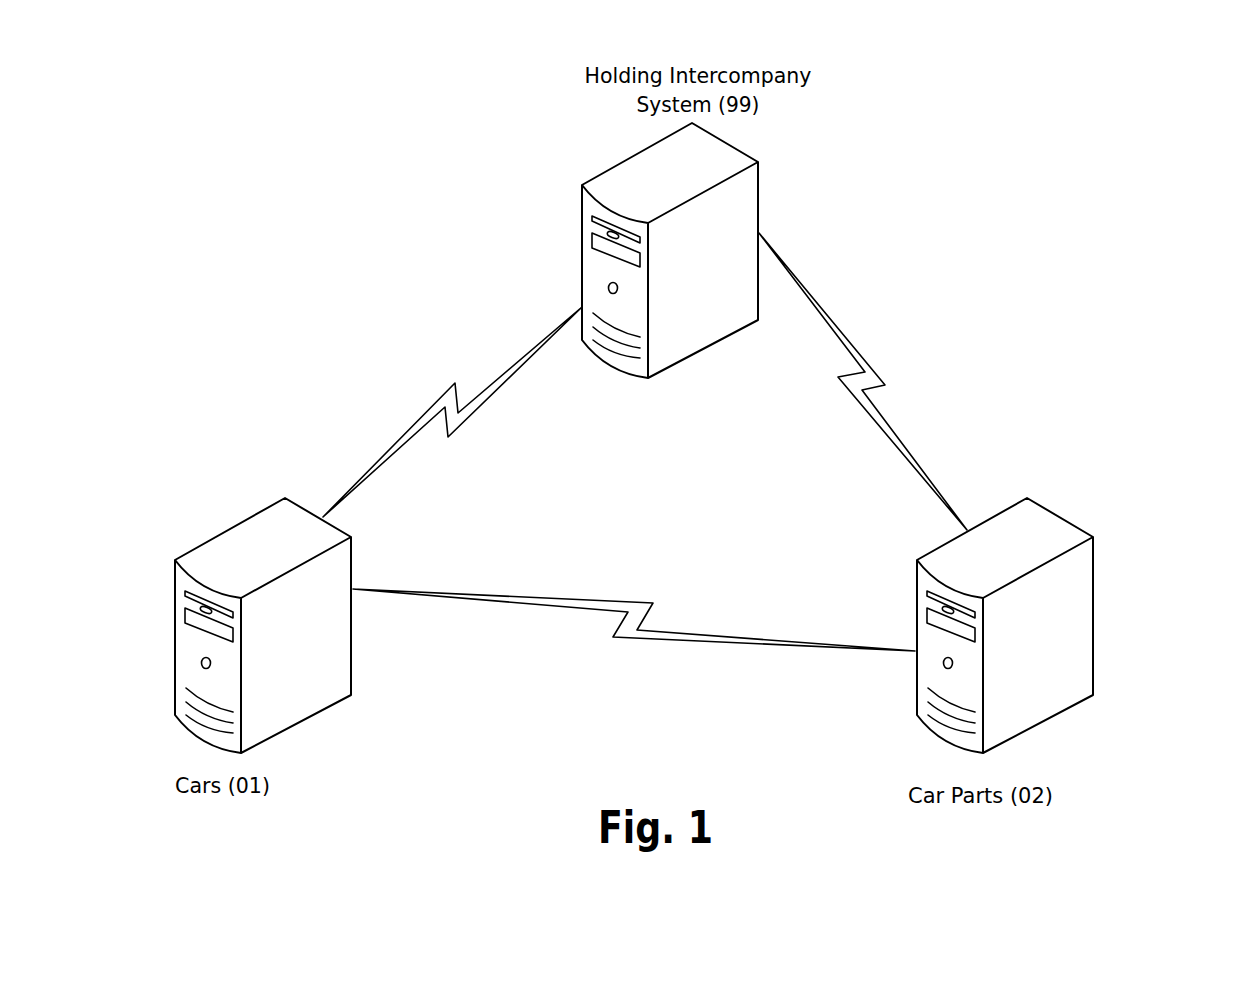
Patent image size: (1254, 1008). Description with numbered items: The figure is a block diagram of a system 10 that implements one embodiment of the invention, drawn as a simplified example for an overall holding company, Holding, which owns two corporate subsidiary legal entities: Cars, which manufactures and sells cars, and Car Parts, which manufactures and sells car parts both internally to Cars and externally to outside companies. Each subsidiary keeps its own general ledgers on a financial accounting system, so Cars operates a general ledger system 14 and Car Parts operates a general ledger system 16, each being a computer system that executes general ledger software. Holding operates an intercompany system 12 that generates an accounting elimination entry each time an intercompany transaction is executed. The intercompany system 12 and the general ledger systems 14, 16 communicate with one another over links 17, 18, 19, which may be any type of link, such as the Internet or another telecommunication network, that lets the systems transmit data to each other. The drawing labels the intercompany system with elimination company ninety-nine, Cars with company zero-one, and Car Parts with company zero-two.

The system 10 is at (1040, 229).
The intercompany system 12 is at (583, 185).
The general ledger system 14 is at (208, 540).
The general ledger system 16 is at (1094, 590).
The link 17 is at (453, 383).
The link 18 is at (885, 420).
The link 19 is at (593, 612).